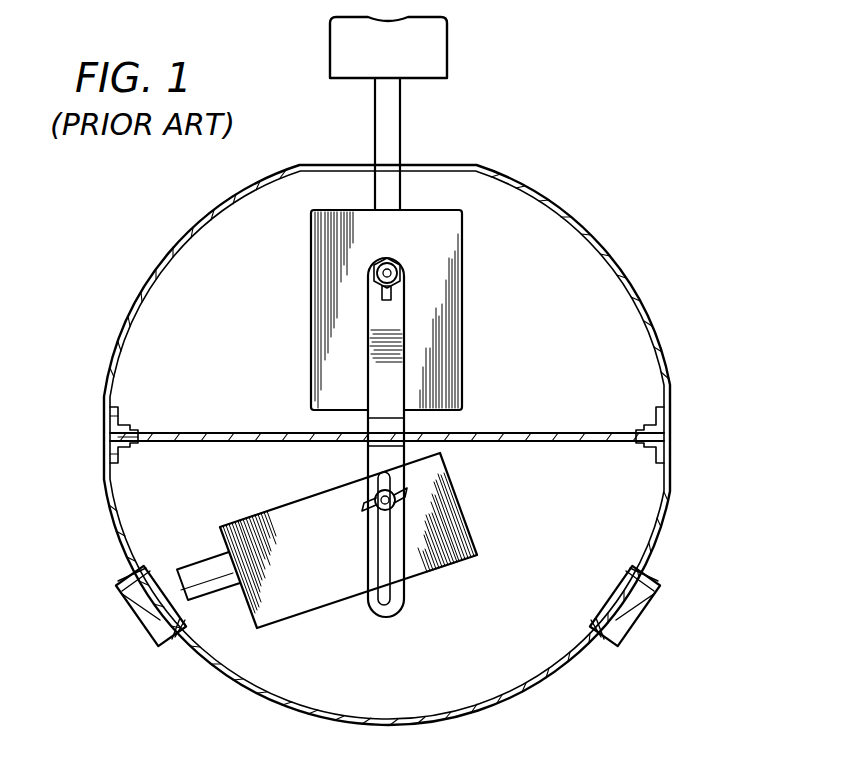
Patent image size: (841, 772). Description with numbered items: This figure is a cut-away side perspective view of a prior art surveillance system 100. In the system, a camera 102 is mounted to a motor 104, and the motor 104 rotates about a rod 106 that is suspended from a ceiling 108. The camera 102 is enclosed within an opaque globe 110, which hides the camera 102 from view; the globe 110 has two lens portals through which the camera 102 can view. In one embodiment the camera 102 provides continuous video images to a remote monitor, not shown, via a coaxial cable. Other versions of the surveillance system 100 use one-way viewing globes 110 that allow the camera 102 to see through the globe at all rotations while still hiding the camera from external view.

The prior art surveillance system 100 is at (600, 150).
The camera 102 is at (322, 597).
The motor 104 is at (462, 312).
The rod 106 is at (400, 118).
The ceiling 108 is at (447, 50).
The opaque globe 110 is at (668, 372).